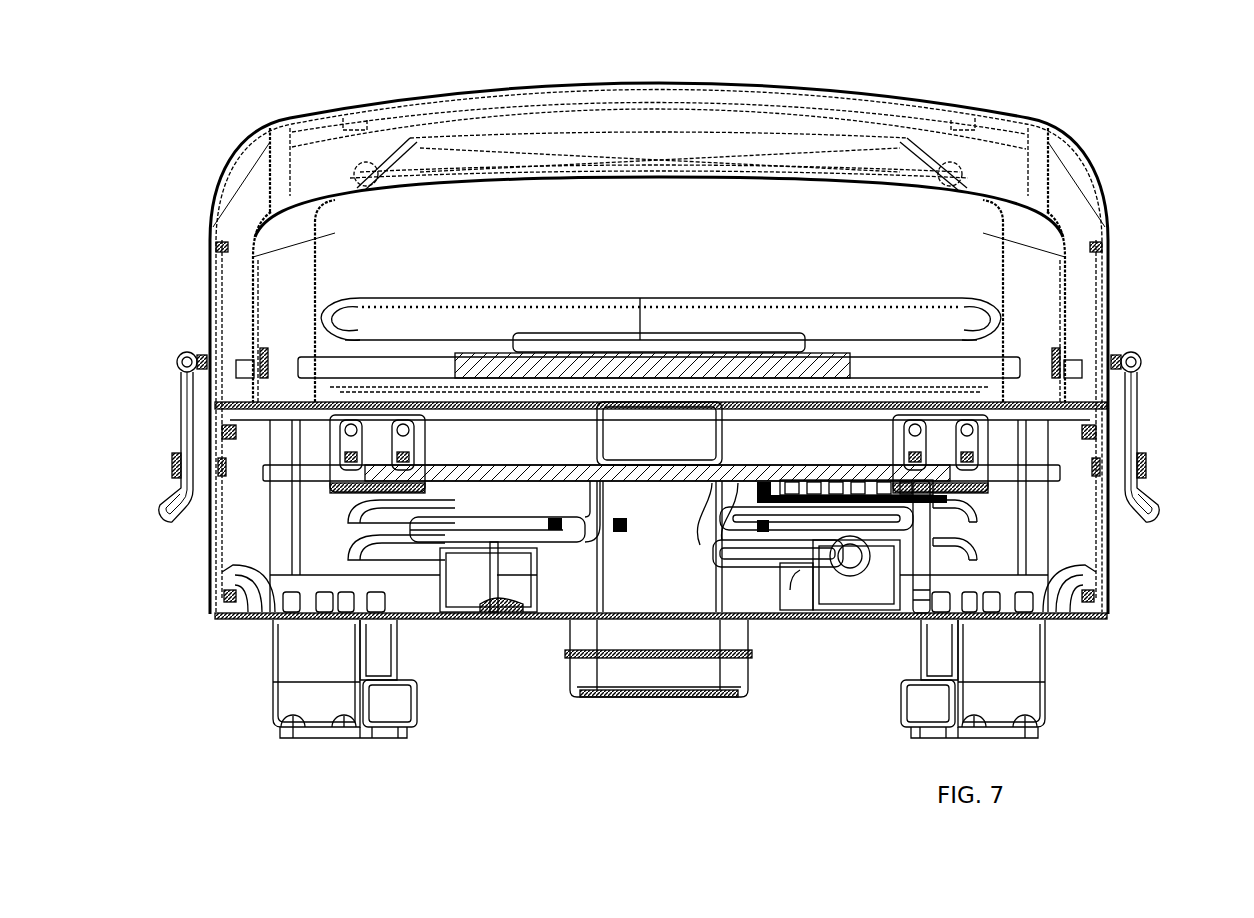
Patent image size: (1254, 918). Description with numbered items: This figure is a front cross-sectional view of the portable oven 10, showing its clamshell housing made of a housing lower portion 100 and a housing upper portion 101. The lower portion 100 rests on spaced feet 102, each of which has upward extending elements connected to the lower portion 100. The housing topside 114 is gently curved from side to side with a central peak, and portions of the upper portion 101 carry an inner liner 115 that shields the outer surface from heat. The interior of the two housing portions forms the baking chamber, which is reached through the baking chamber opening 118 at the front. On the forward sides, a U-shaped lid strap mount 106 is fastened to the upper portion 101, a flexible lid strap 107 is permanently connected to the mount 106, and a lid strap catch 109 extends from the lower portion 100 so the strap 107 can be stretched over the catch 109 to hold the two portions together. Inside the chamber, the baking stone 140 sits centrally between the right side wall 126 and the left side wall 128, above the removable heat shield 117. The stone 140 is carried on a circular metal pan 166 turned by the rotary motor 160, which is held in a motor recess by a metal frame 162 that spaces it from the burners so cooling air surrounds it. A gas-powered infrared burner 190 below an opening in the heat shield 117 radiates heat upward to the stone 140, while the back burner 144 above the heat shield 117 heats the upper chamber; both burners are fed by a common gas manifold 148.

The portable oven 10 is at (1076, 95).
The housing lower portion 100 is at (1112, 616).
The housing upper portion 101 is at (1082, 159).
The feet 102 is at (325, 738).
The lid strap mount 106 is at (1113, 350).
The lid strap 107 is at (1136, 390).
The lid strap catch 109 is at (1140, 470).
The housing topside 114 is at (720, 86).
The inner liner 115 is at (420, 190).
The heat shield 117 is at (212, 474).
The baking chamber opening 118 is at (649, 246).
The right side wall 126 is at (1114, 571).
The left side wall 128 is at (214, 575).
The baking stone 140 is at (262, 357).
The back burner 144 is at (718, 298).
The gas manifold 148 is at (745, 548).
The rotary motor 160 is at (570, 690).
The metal frame 162 is at (599, 440).
The metal pan 166 is at (262, 373).
The infrared burner 190 is at (790, 595).